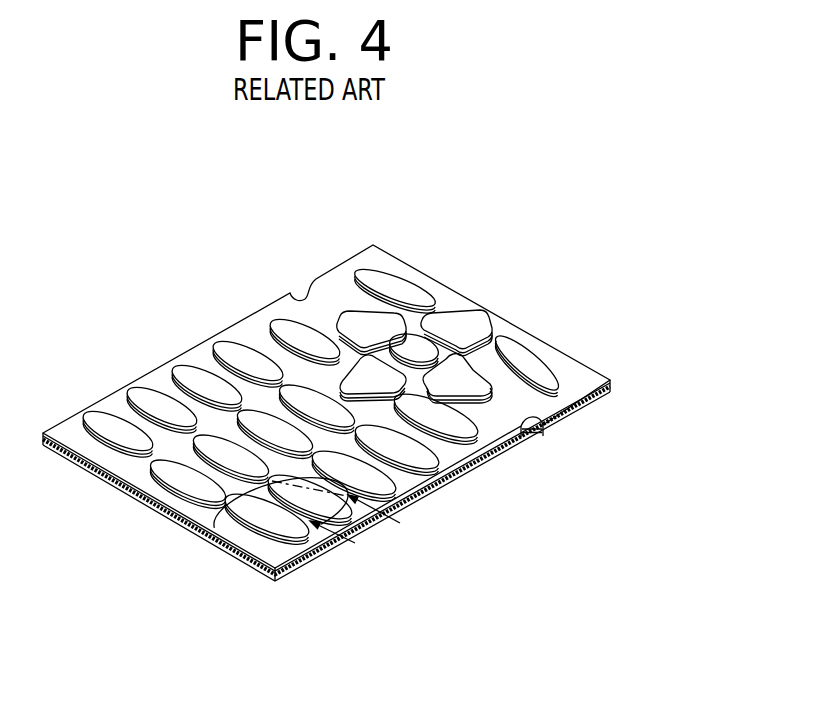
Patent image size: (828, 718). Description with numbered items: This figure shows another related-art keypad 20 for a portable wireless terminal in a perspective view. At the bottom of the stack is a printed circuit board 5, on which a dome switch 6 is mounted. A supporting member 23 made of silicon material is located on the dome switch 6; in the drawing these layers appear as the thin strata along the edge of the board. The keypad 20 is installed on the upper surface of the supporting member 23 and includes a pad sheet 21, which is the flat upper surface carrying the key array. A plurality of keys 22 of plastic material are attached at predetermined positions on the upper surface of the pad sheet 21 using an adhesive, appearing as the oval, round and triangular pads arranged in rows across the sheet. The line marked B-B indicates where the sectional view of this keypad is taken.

The keypad 20 is at (376, 413).
The pad sheet 21 is at (490, 432).
The keys 22 is at (227, 511).
The supporting member 23 is at (612, 382).
The dome switch 6 is at (612, 386).
The printed circuit board 5 is at (612, 391).